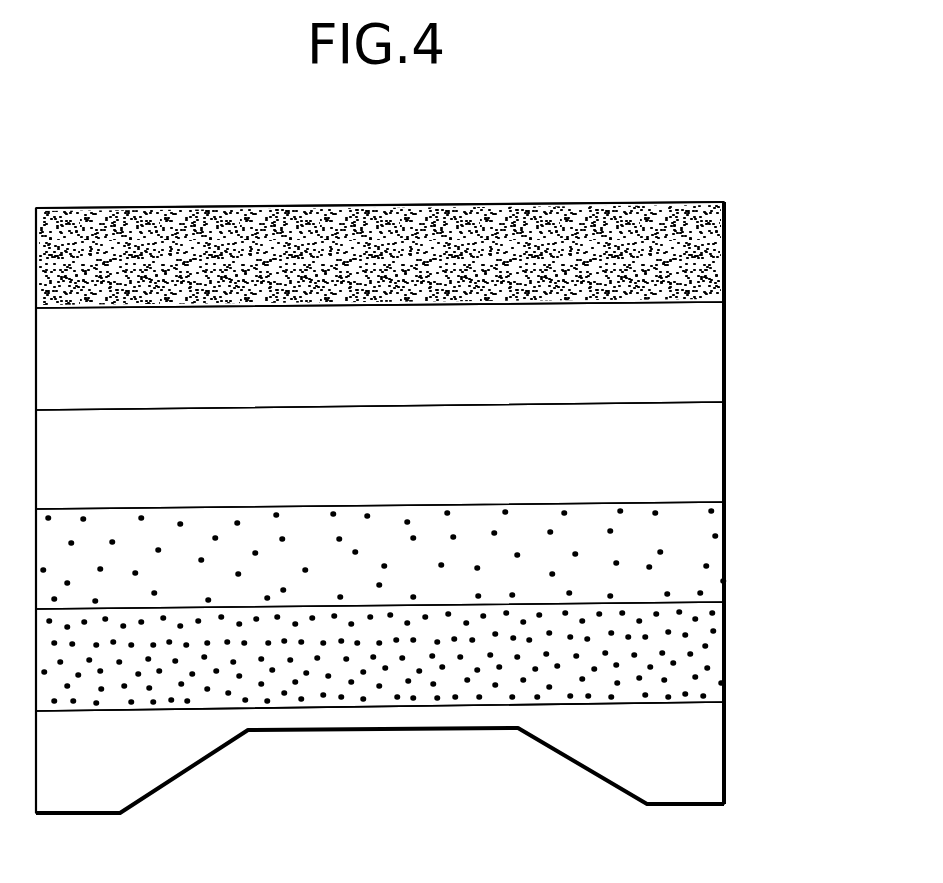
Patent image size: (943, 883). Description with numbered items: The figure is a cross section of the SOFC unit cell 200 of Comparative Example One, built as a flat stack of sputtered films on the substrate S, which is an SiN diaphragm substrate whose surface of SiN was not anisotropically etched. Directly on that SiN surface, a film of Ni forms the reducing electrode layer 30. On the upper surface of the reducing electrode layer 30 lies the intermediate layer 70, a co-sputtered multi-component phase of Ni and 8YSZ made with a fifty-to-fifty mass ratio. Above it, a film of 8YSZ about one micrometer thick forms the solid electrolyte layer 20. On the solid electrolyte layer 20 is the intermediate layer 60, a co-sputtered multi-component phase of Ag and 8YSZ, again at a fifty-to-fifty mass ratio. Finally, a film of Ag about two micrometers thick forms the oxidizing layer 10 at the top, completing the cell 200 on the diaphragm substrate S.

The SOFC unit cell 200 is at (583, 169).
The oxidizing layer 10 is at (707, 250).
The intermediate layer 60 is at (707, 350).
The solid electrolyte layer 20 is at (707, 444).
The intermediate layer 70 is at (707, 551).
The reducing electrode layer 30 is at (709, 656).
The substrate S is at (711, 752).